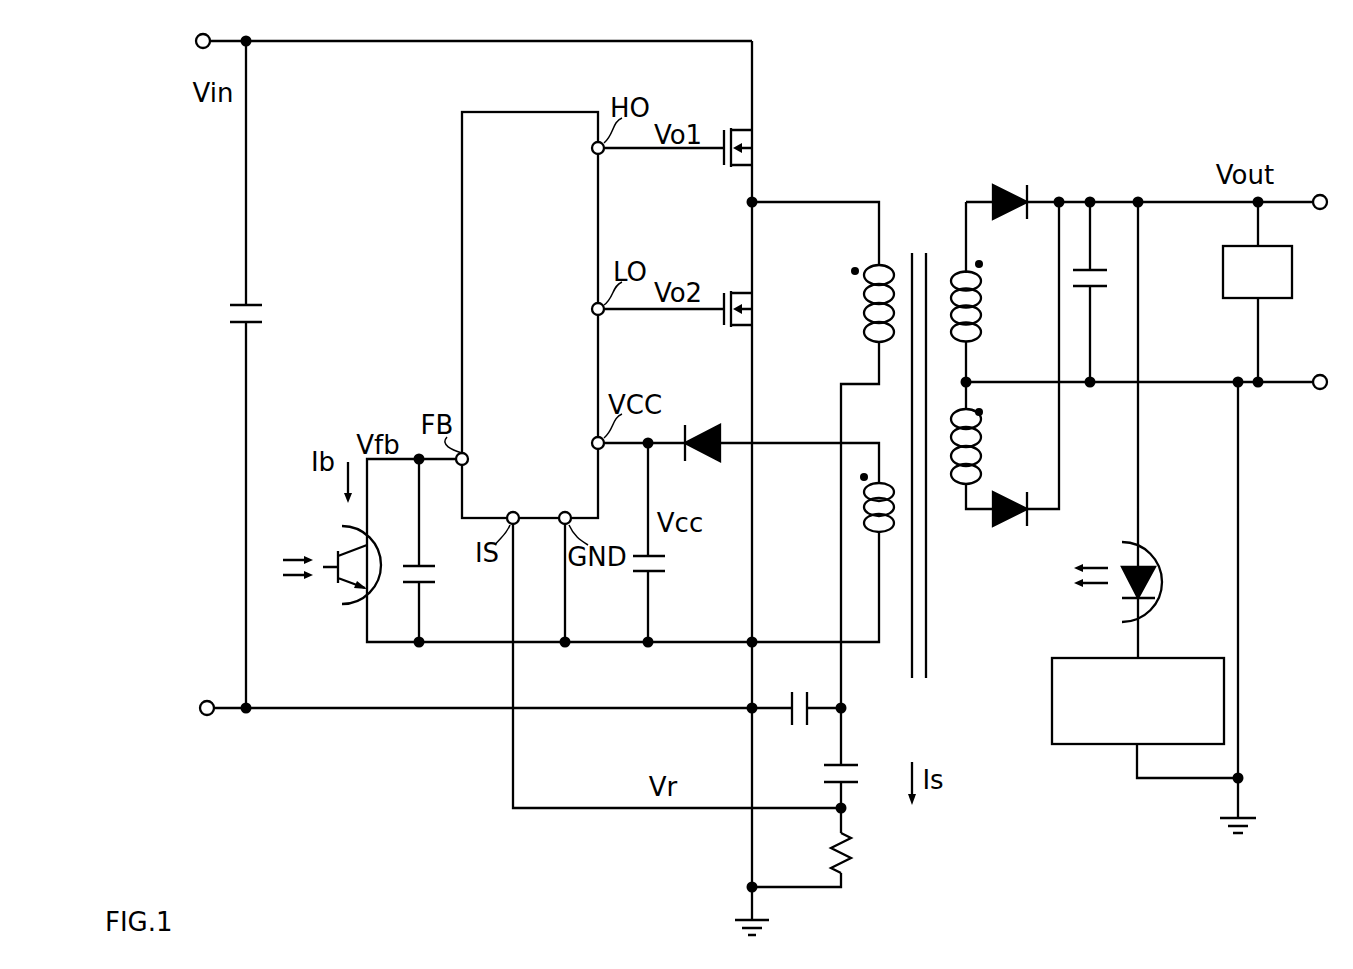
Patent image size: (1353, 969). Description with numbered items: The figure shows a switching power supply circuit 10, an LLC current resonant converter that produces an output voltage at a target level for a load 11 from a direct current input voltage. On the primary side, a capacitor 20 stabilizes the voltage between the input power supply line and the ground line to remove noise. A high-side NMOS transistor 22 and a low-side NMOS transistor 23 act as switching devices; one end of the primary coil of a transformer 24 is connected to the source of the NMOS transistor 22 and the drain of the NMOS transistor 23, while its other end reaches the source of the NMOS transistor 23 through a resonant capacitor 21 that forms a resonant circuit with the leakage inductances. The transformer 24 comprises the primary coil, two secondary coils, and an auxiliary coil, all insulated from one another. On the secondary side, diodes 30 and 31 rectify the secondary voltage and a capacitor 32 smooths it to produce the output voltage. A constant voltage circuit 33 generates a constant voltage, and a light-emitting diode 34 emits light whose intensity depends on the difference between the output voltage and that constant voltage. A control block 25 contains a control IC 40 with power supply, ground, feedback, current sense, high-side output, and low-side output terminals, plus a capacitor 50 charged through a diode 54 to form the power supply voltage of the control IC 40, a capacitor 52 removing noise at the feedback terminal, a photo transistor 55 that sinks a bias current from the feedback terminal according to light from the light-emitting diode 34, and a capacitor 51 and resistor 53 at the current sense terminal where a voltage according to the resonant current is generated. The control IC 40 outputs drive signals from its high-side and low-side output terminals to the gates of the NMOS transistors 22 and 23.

The switching power supply circuit 10 is at (1056, 68).
The load 11 is at (1292, 272).
The capacitor 20 is at (262, 305).
The capacitor 21 is at (804, 692).
The NMOS transistor 22 is at (757, 150).
The NMOS transistor 23 is at (757, 311).
The transformer 24 is at (915, 252).
The control block 25 is at (383, 212).
The diode 30 is at (1000, 186).
The diode 31 is at (995, 527).
The capacitor 32 is at (1100, 289).
The constant voltage circuit 33 is at (1190, 658).
The light-emitting diode 34 is at (1150, 556).
The control IC 40 is at (460, 112).
The capacitor 50 is at (666, 576).
The capacitor 51 is at (858, 766).
The capacitor 52 is at (436, 583).
The resistor 53 is at (852, 840).
The diode 54 is at (687, 425).
The photo transistor 55 is at (342, 606).